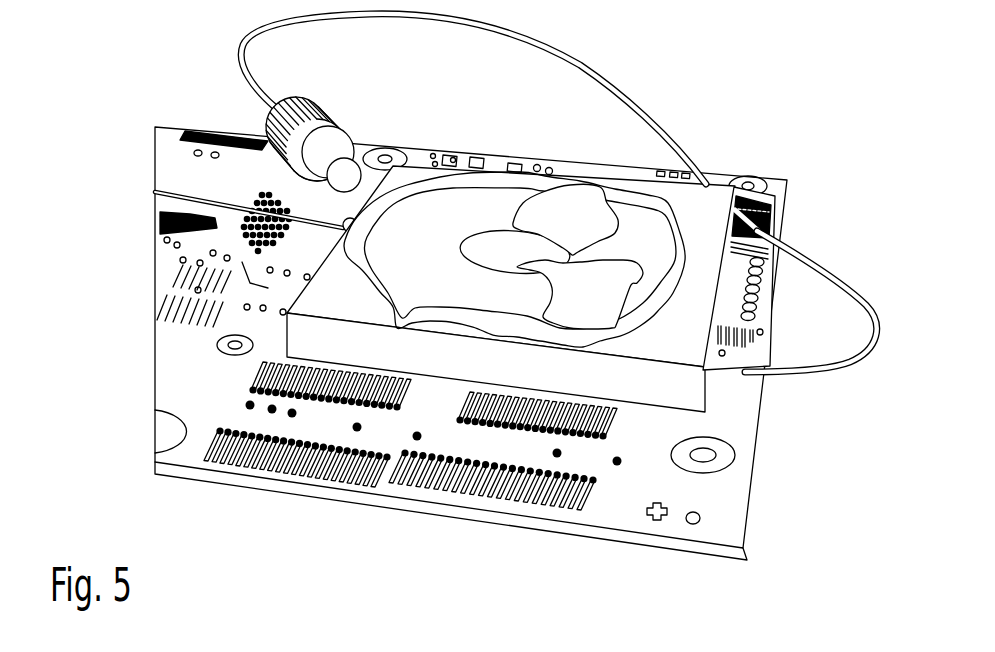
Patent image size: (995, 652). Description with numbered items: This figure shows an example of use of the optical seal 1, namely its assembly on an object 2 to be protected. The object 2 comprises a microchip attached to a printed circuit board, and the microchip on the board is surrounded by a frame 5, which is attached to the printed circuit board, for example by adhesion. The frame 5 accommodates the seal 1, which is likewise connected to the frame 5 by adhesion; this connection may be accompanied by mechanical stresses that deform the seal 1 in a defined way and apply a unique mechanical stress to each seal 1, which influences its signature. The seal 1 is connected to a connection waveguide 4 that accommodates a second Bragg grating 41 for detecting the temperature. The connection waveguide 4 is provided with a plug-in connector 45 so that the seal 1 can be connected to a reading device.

The optical seal 1 is at (457, 197).
The object to be protected 2 is at (733, 507).
The connection waveguide 4 is at (651, 116).
The second Bragg grating 41 is at (826, 275).
The plug-in connector 45 is at (267, 132).
The frame 5 is at (705, 390).